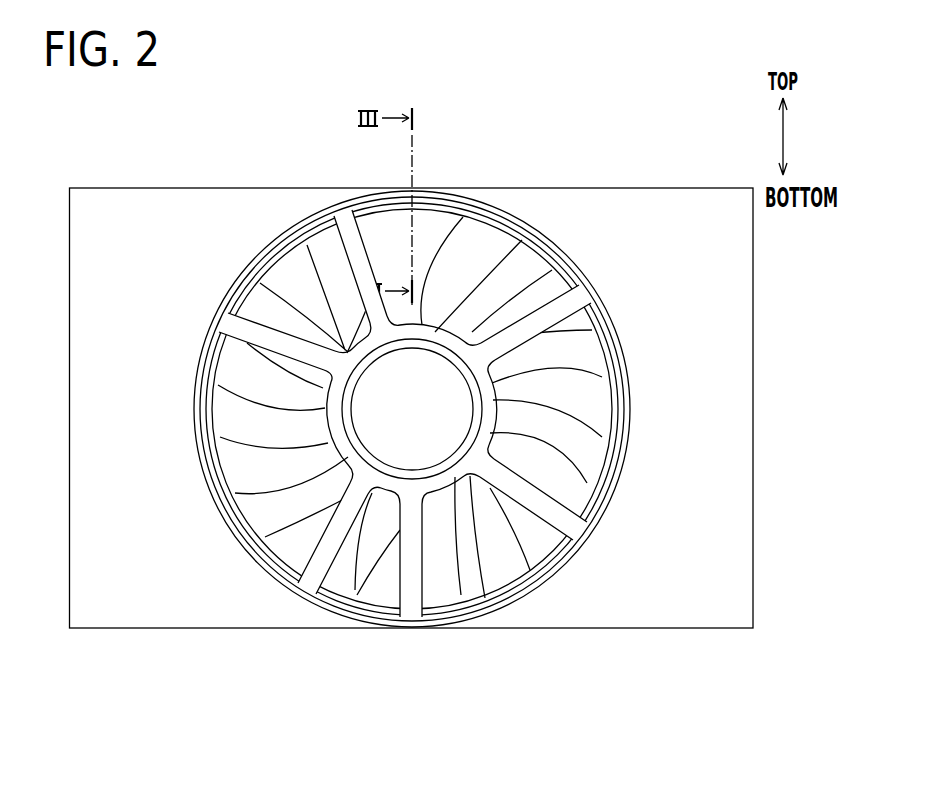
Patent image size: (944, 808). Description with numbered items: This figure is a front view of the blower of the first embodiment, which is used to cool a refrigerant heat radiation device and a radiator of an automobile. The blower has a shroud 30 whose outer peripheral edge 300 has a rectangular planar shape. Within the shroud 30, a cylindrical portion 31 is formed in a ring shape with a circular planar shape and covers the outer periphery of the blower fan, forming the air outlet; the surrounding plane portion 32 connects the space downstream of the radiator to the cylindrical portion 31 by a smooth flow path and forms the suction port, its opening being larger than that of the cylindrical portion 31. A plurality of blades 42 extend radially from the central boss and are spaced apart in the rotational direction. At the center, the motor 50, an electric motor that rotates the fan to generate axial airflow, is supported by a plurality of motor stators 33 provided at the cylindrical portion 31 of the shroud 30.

The shroud 30 is at (189, 641).
The cylindrical portion 31 is at (282, 236).
The plane portion 32 is at (678, 252).
The motor stator 33 is at (325, 552).
The blade 42 is at (420, 257).
The motor 50 is at (423, 438).
The outer peripheral edge 300 is at (648, 629).